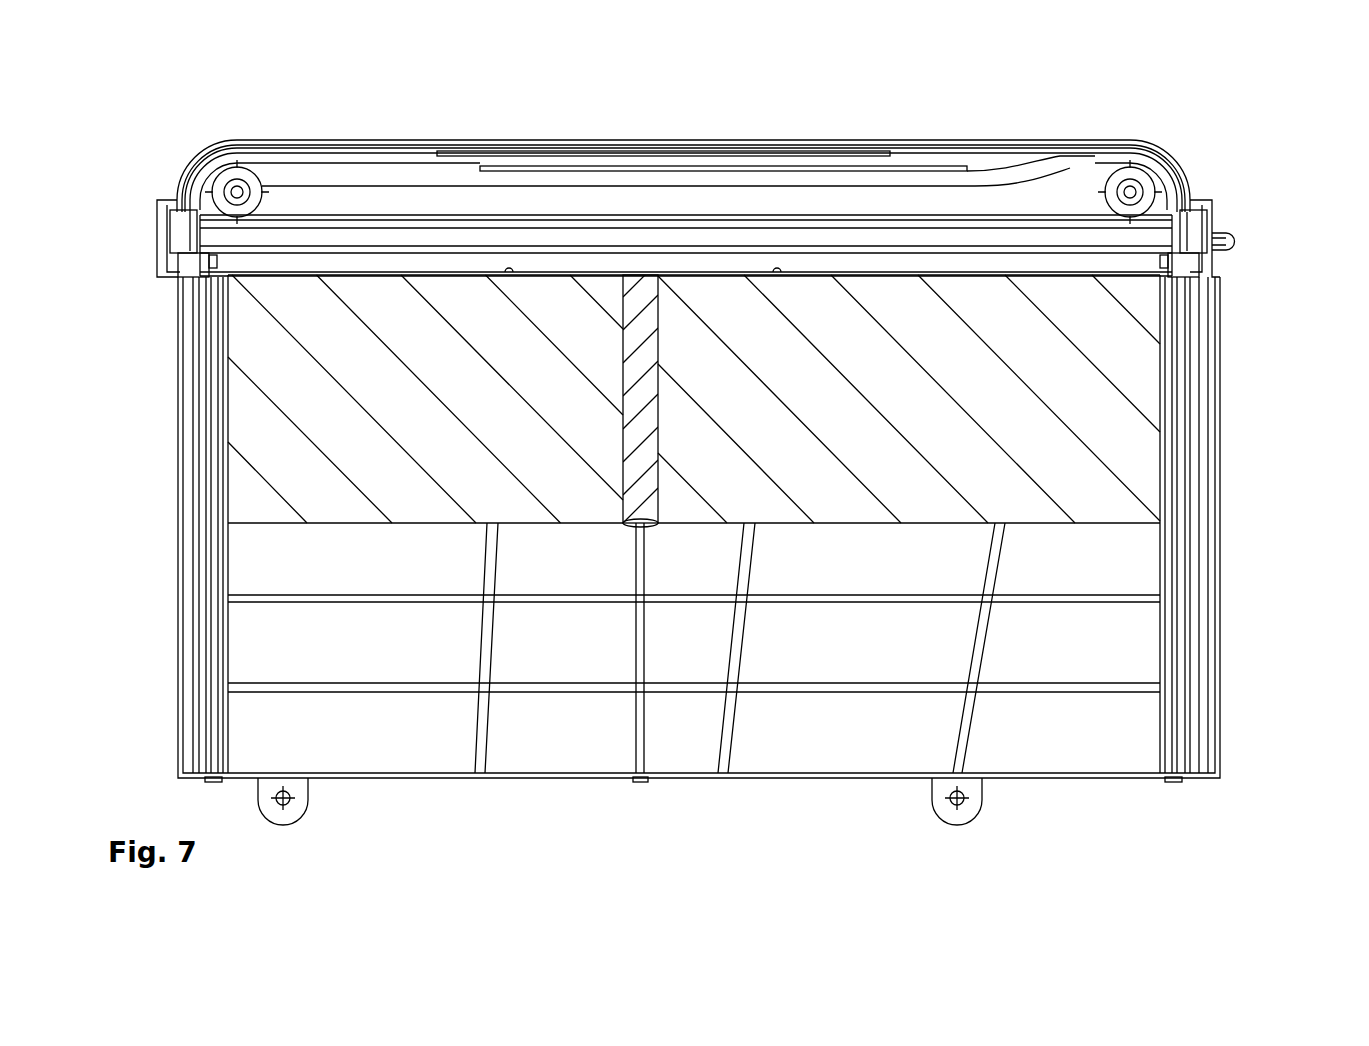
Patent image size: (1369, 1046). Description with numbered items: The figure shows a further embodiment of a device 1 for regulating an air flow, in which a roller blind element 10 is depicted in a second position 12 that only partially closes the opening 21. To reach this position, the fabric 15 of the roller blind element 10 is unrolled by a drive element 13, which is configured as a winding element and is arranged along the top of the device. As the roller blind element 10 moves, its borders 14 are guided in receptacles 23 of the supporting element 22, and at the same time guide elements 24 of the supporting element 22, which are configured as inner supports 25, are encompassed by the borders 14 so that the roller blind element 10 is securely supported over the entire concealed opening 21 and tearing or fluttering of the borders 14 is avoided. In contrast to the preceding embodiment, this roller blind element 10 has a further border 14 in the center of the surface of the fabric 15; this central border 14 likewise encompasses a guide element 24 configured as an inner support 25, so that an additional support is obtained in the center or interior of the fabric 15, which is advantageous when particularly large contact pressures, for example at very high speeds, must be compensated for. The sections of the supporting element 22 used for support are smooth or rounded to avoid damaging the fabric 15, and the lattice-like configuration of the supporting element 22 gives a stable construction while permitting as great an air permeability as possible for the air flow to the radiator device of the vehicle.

The device 1 is at (130, 108).
The roller blind element 10 is at (711, 528).
The second position 12 is at (711, 528).
The drive element 13 is at (584, 242).
The border 14 is at (624, 410).
The fabric 15 is at (845, 410).
The opening 21 is at (603, 660).
The supporting element 22 is at (735, 660).
The receptacle 23 is at (226, 566).
The guide element 24 is at (697, 776).
The inner support 25 is at (222, 783).